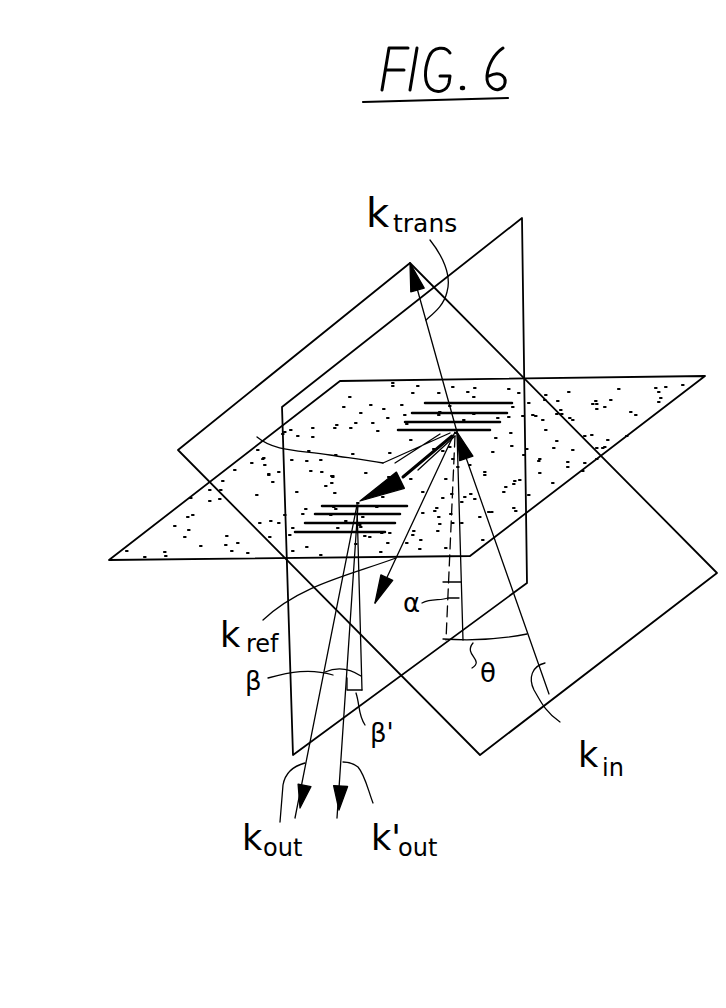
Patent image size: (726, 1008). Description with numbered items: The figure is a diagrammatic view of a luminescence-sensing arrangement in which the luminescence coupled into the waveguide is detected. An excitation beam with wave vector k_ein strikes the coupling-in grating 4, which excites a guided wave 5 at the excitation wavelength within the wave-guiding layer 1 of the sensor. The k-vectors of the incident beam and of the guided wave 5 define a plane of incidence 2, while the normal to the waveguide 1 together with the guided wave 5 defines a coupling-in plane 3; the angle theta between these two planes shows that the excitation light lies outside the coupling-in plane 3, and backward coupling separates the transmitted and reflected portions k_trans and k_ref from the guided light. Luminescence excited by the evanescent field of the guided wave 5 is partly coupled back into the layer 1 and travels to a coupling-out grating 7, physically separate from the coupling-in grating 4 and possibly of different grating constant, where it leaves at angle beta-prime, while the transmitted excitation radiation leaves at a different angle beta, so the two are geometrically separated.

The waveguide 1 is at (654, 375).
The plane of incidence 2 is at (658, 528).
The coupling-in plane 3 is at (297, 393).
The coupling-in grating 4 is at (478, 407).
The guided wave 5 is at (257, 437).
The coupling-out grating 7 is at (287, 533).